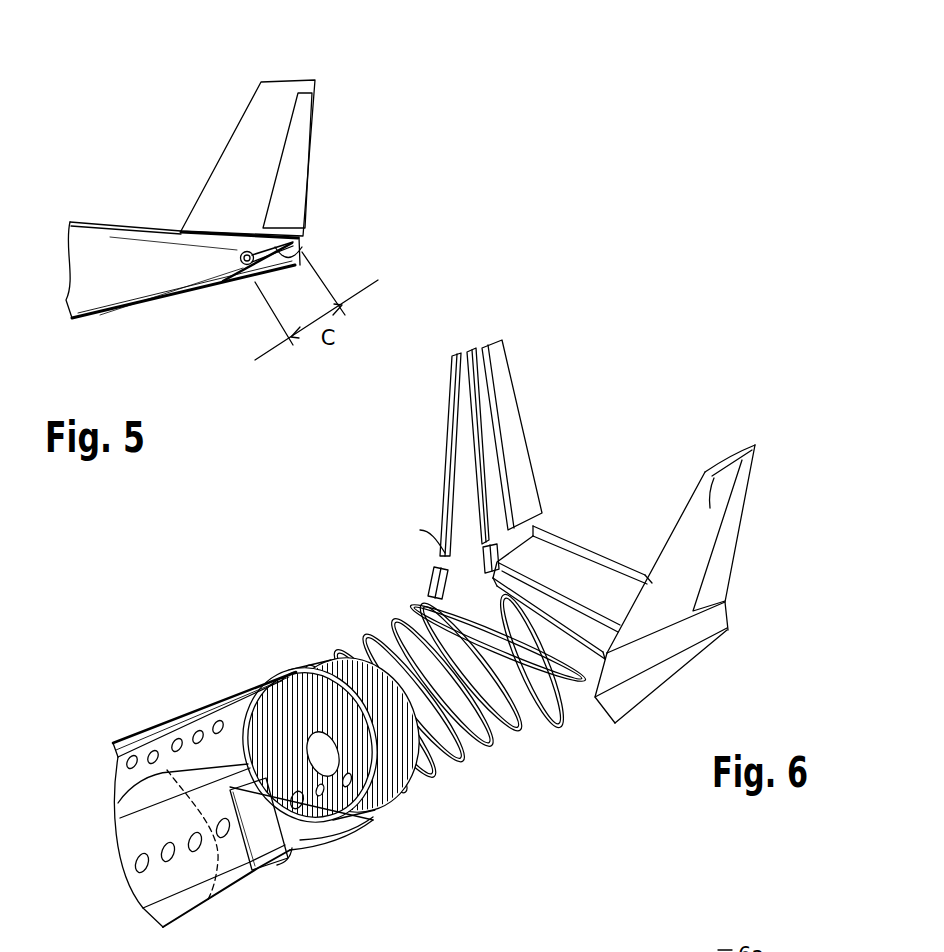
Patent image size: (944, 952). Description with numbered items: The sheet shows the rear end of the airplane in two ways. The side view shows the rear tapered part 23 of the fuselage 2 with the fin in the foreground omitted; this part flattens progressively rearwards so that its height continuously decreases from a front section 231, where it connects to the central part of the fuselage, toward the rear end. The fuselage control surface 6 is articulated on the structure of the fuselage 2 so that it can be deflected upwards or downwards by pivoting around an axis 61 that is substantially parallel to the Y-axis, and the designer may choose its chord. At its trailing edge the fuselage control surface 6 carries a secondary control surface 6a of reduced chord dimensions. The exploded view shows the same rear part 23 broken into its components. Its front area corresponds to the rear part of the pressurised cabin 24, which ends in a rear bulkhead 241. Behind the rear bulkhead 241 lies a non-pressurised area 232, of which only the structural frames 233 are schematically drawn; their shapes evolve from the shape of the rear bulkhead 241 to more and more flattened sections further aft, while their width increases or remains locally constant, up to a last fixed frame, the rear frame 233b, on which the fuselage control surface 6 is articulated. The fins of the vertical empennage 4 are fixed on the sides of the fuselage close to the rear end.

In FIG. 5, the fuselage 2 is at (91, 218).
In FIG. 5, the vertical empennage 4 is at (278, 100).
In FIG. 6, the vertical empennage 4 is at (533, 384).
In FIG. 5, the fuselage control surface 6 is at (304, 248).
In FIG. 6, the fuselage control surface 6 is at (612, 587).
In FIG. 5, the axis 61 is at (240, 258).
In FIG. 5, the rear tapered part 23 is at (122, 288).
In FIG. 6, the rear tapered part 23 is at (353, 626).
In FIG. 6, the secondary control surface 6a is at (562, 542).
In FIG. 6, the rear frame 233b is at (470, 573).
In FIG. 6, the non-pressurised area 232 is at (495, 716).
In FIG. 6, the structural frames 233 is at (542, 725).
In FIG. 6, the pressurised cabin 24 is at (217, 742).
In FIG. 6, the front section 231 is at (130, 792).
In FIG. 6, the rear bulkhead 241 is at (357, 838).